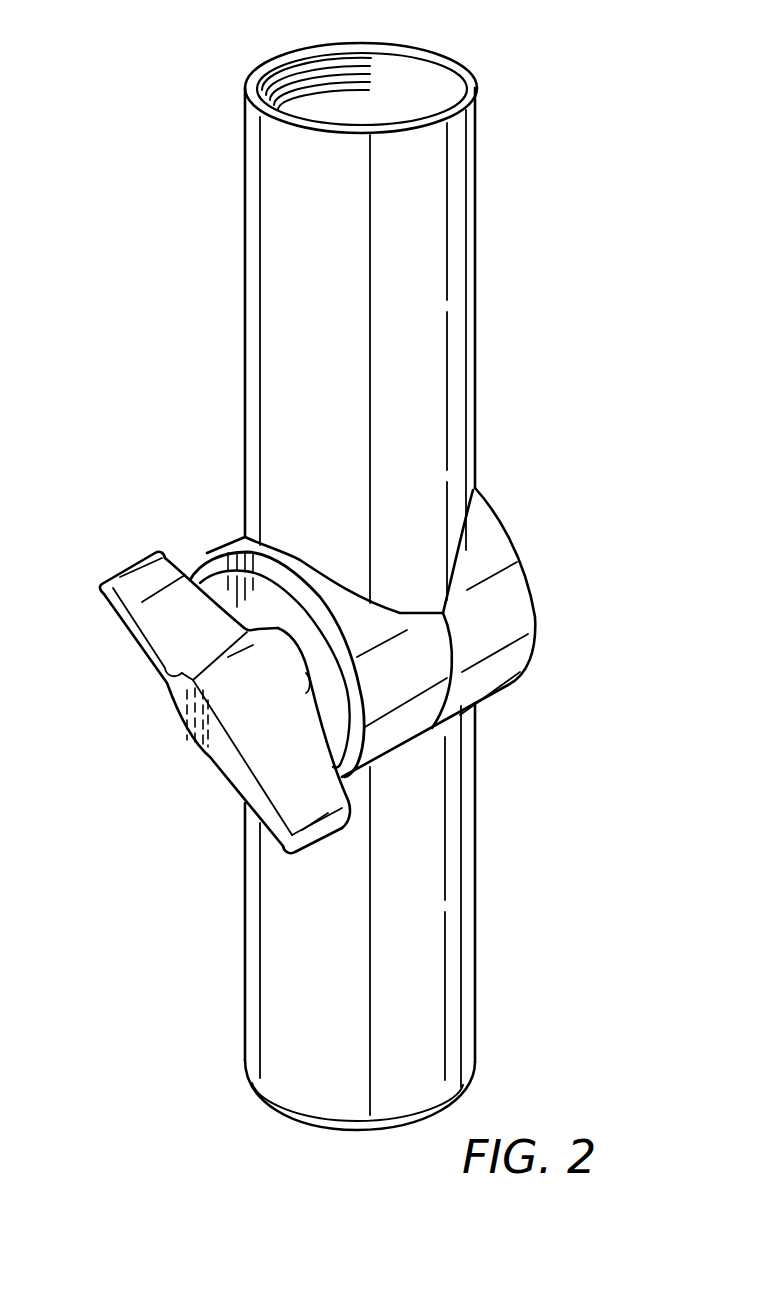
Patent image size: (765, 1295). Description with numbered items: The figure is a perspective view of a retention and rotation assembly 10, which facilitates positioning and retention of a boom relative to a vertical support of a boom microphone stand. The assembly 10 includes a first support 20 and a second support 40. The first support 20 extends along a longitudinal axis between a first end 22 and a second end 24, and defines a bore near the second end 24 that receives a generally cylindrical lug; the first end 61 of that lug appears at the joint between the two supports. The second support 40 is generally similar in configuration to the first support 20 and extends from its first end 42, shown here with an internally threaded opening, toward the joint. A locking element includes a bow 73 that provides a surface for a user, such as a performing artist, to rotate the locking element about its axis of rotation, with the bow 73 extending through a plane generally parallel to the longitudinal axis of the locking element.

The retention and rotation assembly 10 is at (143, 528).
The first support 20 is at (418, 863).
The first end 22 is at (300, 1120).
The second end 24 is at (273, 557).
The second support 40 is at (270, 257).
The first end 42 is at (291, 58).
The first end 61 is at (229, 602).
The bow 73 is at (168, 633).